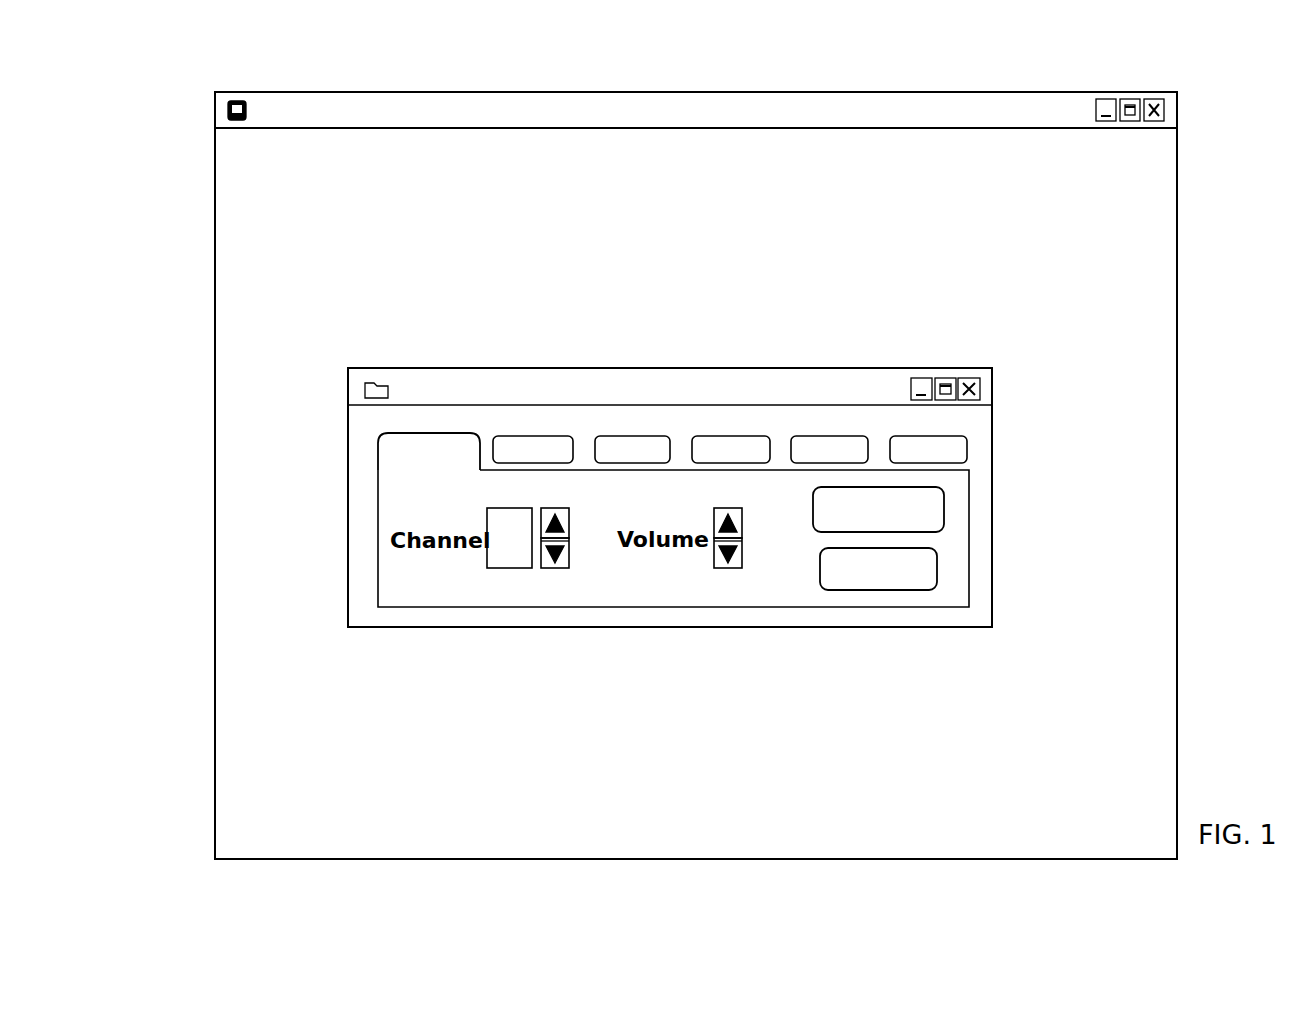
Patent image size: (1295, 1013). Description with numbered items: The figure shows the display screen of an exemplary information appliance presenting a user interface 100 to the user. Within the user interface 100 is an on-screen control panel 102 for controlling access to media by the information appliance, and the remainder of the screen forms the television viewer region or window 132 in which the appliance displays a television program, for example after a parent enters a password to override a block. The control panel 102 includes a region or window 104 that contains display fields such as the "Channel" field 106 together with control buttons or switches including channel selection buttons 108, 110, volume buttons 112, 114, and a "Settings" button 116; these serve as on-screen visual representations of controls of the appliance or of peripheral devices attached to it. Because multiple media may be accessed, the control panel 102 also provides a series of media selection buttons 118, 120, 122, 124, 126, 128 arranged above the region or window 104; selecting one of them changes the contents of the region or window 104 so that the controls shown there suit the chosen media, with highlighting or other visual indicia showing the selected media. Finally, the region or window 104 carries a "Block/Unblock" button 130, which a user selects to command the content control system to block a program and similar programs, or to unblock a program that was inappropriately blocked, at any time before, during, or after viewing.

The user interface 100 is at (1196, 64).
The on-screen control panel 102 is at (668, 368).
The region or window 104 is at (725, 607).
The "Channel" display field 106 is at (498, 509).
The channel selection control button 108 is at (569, 515).
The channel selection control button 110 is at (569, 549).
The volume control button 112 is at (743, 517).
The volume control button 114 is at (743, 552).
The "Settings" control button 116 is at (938, 567).
The media selection button 118 is at (481, 446).
The media selection button 120 is at (574, 449).
The media selection button 122 is at (671, 449).
The media selection button 124 is at (771, 449).
The media selection button 126 is at (869, 449).
The media selection button 128 is at (968, 449).
The "Block/Unblock" button 130 is at (944, 509).
The television viewer region or window 132 is at (1178, 467).